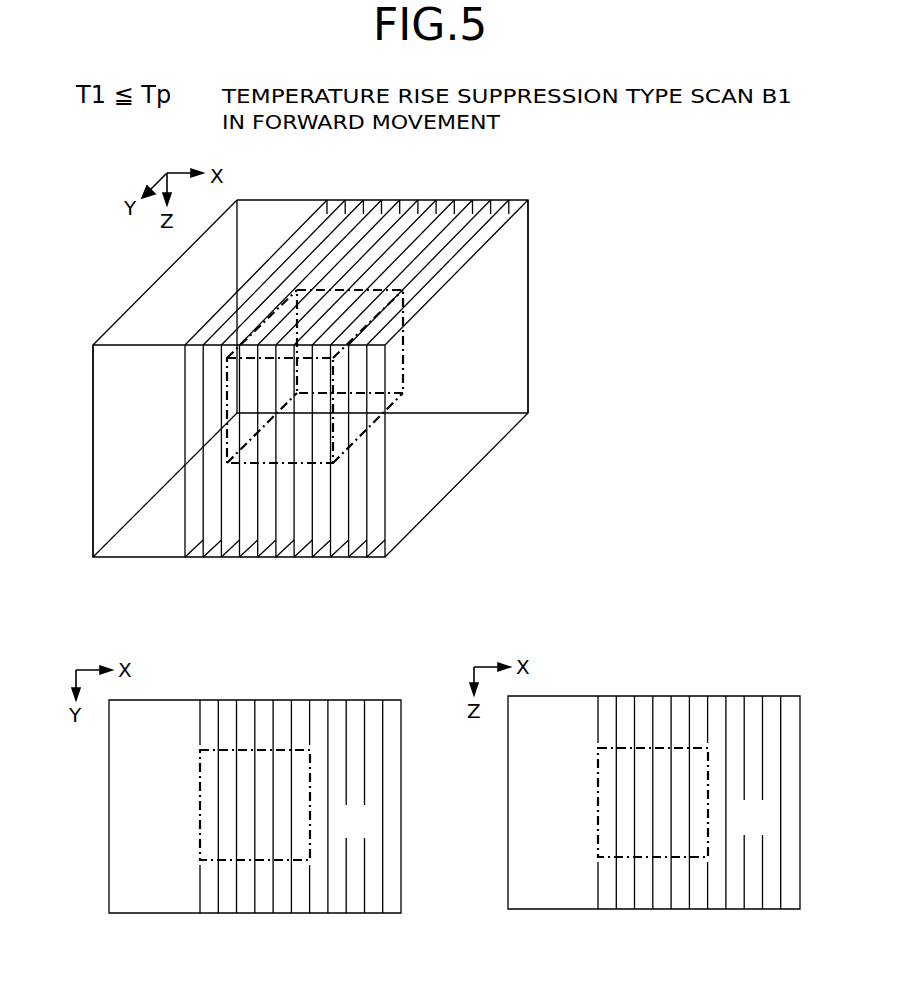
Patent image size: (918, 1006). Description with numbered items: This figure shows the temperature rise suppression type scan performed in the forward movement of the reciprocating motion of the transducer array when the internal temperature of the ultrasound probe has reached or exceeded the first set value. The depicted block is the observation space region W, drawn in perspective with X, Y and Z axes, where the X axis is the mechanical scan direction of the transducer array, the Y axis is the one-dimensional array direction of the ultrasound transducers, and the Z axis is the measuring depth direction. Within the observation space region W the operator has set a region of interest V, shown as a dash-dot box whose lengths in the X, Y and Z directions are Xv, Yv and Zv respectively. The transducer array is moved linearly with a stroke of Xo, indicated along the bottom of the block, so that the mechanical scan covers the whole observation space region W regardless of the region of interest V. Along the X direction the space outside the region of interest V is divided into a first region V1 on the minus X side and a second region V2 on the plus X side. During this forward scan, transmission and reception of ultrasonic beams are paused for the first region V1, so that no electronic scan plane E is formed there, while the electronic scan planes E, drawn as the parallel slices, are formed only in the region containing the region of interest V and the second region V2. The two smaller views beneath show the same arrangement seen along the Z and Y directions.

The observation space region W is at (548, 247).
The electronic scan plane E is at (412, 223).
The region of interest V is at (373, 422).
The first region V1 is at (158, 513).
The second region V2 is at (410, 505).
The length of the region of interest in the X-axis direction Xv is at (327, 479).
The length of the region of interest in the Y-axis direction Yv is at (259, 297).
The length of the region of interest in the Z-axis direction Zv is at (420, 296).
The stroke Xo is at (385, 605).